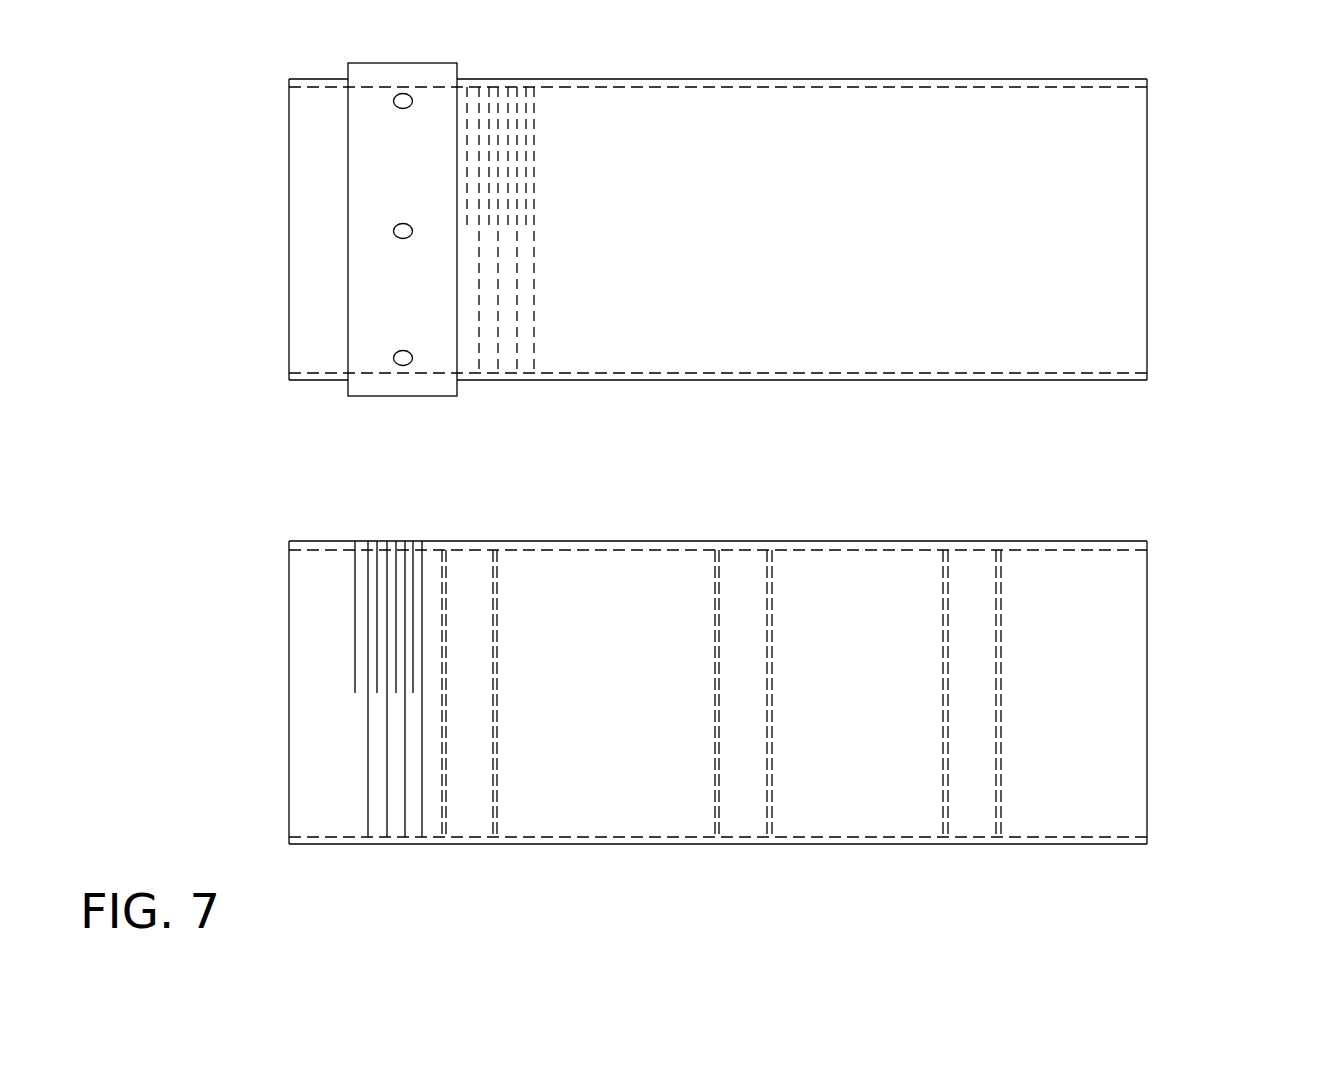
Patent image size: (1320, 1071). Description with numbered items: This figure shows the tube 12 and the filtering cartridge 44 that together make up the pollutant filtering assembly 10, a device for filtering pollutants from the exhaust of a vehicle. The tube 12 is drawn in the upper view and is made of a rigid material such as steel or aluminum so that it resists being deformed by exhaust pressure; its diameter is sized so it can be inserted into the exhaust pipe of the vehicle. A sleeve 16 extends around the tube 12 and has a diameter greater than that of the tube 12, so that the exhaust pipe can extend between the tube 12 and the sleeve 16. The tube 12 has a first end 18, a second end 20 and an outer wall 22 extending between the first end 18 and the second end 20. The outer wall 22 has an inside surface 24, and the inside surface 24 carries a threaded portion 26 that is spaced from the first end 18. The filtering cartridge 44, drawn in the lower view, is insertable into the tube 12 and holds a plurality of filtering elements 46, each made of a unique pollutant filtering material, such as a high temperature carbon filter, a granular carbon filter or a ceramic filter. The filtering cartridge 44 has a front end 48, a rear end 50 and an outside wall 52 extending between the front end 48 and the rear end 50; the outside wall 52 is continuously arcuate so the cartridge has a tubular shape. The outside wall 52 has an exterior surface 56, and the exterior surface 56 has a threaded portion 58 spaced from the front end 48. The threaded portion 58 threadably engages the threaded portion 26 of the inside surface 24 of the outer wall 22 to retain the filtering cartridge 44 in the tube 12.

The pollutant filtering assembly 10 is at (1232, 836).
The tube 12 is at (843, 79).
The sleeve 16 is at (381, 396).
The first end 18 is at (289, 289).
The second end 20 is at (1147, 230).
The outer wall 22 is at (1002, 333).
The inside surface 24 is at (803, 373).
The threaded portion 26 is at (505, 163).
The filtering cartridge 44 is at (853, 844).
The filtering elements 46 is at (470, 803).
The front end 48 is at (289, 638).
The rear end 50 is at (1147, 691).
The outside wall 52 is at (1076, 810).
The exterior surface 56 is at (833, 577).
The threaded portion 58 is at (393, 617).